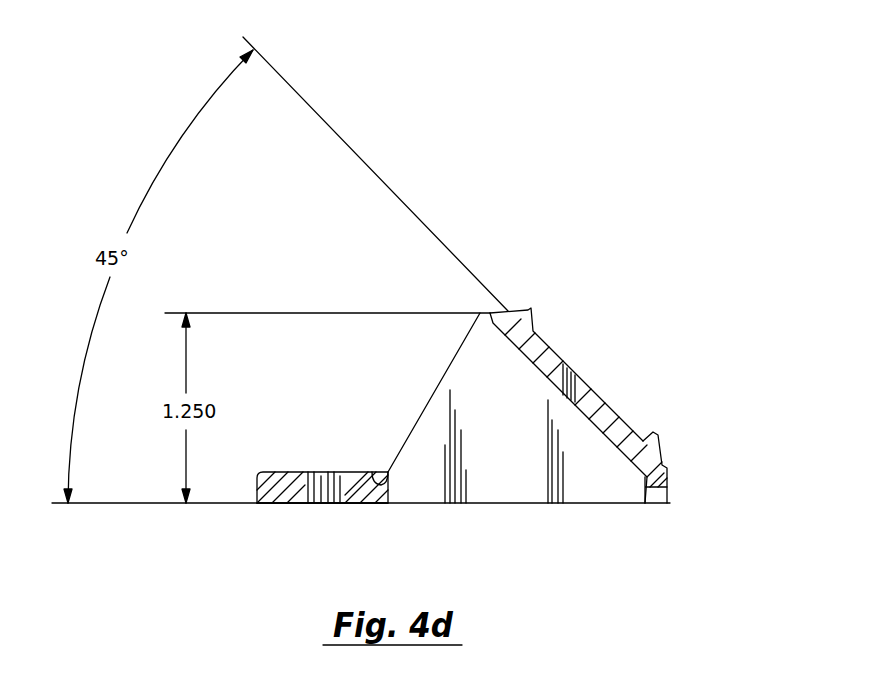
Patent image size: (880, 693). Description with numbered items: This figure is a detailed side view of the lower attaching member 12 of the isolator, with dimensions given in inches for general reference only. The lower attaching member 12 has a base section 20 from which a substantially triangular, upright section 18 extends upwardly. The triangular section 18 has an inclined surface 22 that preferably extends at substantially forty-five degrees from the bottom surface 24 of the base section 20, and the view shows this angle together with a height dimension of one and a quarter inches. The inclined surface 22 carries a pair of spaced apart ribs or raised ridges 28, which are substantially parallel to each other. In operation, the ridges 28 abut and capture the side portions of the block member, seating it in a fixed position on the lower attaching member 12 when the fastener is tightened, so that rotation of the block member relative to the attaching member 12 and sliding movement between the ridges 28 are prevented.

The lower attaching member 12 is at (588, 240).
The triangular upright section 18 is at (522, 452).
The base section 20 is at (287, 470).
The inclined surface 22 is at (562, 355).
The bottom surface 24 is at (296, 505).
The raised ridges 28 is at (535, 306).